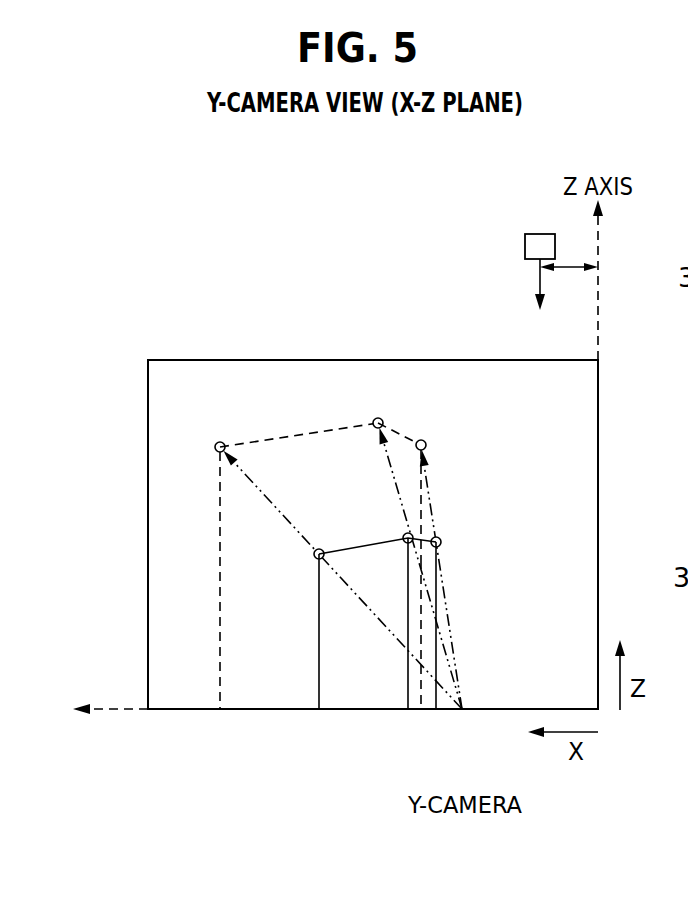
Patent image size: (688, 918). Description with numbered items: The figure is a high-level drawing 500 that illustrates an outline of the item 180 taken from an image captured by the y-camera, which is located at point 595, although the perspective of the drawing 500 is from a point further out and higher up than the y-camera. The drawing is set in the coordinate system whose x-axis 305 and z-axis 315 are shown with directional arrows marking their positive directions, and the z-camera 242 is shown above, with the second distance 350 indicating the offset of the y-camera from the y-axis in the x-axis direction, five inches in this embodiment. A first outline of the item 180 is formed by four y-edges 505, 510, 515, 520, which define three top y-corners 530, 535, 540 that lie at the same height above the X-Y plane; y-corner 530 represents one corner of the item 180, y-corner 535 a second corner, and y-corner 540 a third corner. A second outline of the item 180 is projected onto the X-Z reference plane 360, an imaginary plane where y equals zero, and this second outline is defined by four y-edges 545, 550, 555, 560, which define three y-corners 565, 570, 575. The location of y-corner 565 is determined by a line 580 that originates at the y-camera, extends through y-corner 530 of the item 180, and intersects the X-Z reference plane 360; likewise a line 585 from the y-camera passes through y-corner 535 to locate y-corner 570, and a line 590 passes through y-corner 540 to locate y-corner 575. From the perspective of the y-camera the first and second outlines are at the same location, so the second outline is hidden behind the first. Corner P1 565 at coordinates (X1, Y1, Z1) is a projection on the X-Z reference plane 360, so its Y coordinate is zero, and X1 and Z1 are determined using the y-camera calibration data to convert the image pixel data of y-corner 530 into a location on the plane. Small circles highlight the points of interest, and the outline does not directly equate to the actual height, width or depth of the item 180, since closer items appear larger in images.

The drawing 500 is at (218, 188).
The z-camera 242 is at (537, 234).
The z-axis 315 is at (599, 252).
The second distance 350 is at (567, 269).
The y-corner 565 is at (216, 444).
The y-edge 550 is at (283, 437).
The y-corner 570 is at (372, 416).
The y-edge 555 is at (398, 432).
The y-corner 575 is at (427, 440).
The y-edge 560 is at (425, 487).
The line 590 is at (432, 514).
The y-corner 540 is at (442, 540).
The line 585 is at (390, 470).
The y-edge 515 is at (415, 524).
The y-corner 535 is at (402, 534).
The line 580 is at (262, 494).
The y-corner 530 is at (313, 560).
The y-edge 545 is at (218, 555).
The y-edge 510 is at (357, 548).
The y-edge 505 is at (317, 636).
The y-edge 520 is at (436, 662).
The item 180 is at (363, 688).
The point 595 is at (460, 712).
The x-axis 305 is at (122, 712).
The X-Z reference plane 360 is at (188, 680).